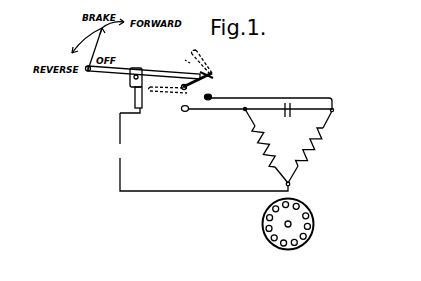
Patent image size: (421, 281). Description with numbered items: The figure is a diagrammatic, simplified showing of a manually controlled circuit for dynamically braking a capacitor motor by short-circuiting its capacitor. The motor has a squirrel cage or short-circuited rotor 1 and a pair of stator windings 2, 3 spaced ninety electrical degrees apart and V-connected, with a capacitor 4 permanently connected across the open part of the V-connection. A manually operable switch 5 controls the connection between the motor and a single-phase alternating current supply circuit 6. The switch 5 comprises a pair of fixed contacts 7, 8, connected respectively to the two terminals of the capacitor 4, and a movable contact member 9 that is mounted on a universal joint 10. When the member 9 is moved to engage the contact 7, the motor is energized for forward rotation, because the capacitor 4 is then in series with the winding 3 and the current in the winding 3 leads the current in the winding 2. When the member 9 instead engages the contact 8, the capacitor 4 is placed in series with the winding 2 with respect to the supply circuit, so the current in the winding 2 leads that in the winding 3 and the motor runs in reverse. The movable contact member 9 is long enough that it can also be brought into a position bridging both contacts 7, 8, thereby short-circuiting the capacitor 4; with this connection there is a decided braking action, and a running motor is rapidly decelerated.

The short-circuited rotor 1 is at (311, 212).
The stator winding 2 is at (258, 153).
The stator winding 3 is at (315, 153).
The capacitor 4 is at (287, 100).
The manually operable switch 5 is at (164, 65).
The single-phase alternating current supply circuit 6 is at (202, 152).
The fixed contact 7 is at (185, 112).
The fixed contact 8 is at (211, 96).
The movable contact member 9 is at (215, 72).
The universal joint 10 is at (132, 89).